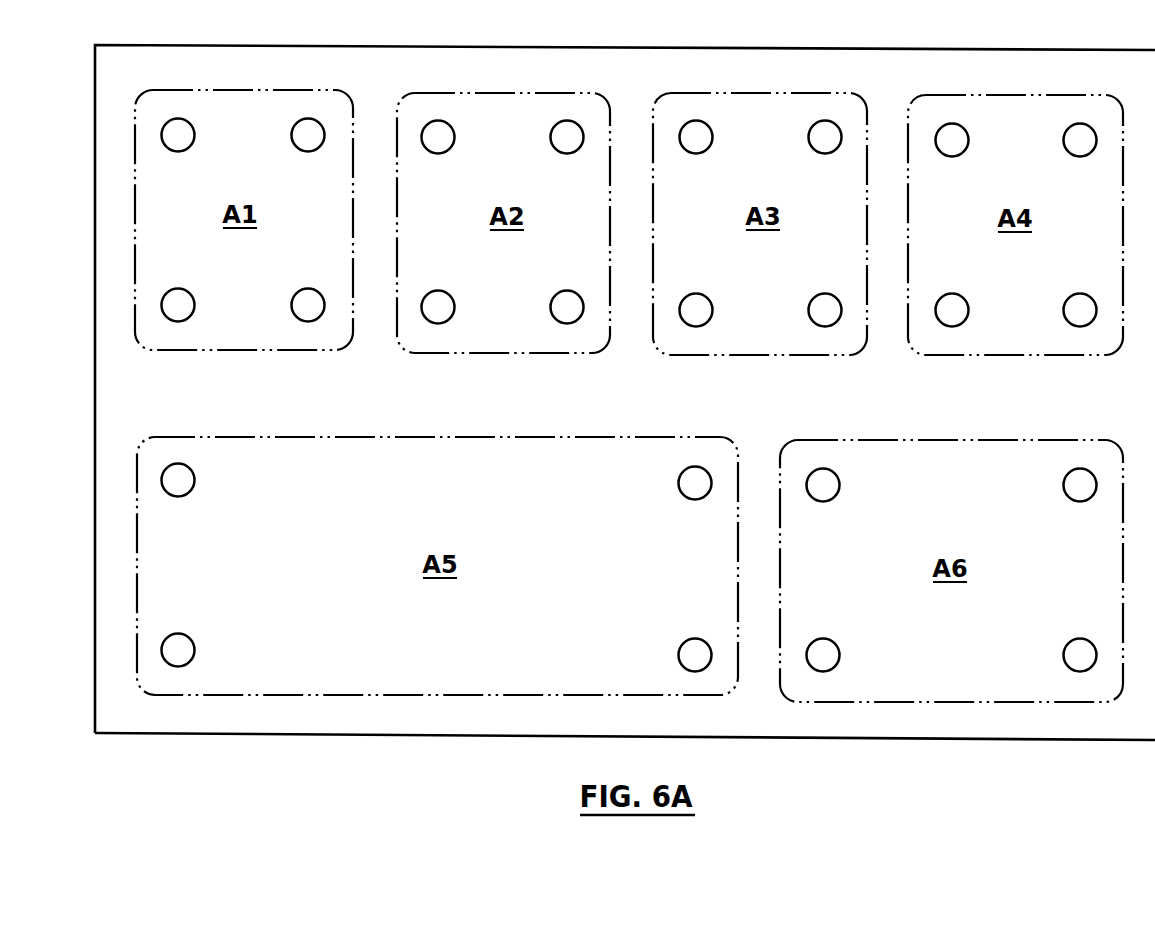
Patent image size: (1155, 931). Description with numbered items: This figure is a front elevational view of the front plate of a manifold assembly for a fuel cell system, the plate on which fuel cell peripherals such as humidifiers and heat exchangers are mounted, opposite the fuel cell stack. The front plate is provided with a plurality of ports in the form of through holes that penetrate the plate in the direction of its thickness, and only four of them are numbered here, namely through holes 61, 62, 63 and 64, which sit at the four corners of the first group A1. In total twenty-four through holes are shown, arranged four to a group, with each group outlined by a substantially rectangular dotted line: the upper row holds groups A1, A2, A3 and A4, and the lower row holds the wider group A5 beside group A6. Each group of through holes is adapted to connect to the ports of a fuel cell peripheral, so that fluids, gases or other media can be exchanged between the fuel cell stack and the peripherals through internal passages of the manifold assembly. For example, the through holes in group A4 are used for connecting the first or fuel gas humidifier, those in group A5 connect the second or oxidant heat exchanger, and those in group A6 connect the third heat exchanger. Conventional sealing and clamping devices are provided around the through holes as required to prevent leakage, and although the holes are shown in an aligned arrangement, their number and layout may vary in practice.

The through hole 61 is at (191, 146).
The through hole 62 is at (297, 147).
The through hole 63 is at (197, 268).
The through hole 64 is at (290, 268).
The group of through holes A1 is at (244, 220).
The group of through holes A2 is at (503, 223).
The group of through holes A3 is at (760, 224).
The group of through holes A4 is at (1015, 225).
The group of through holes A5 is at (437, 566).
The group of through holes A6 is at (951, 571).